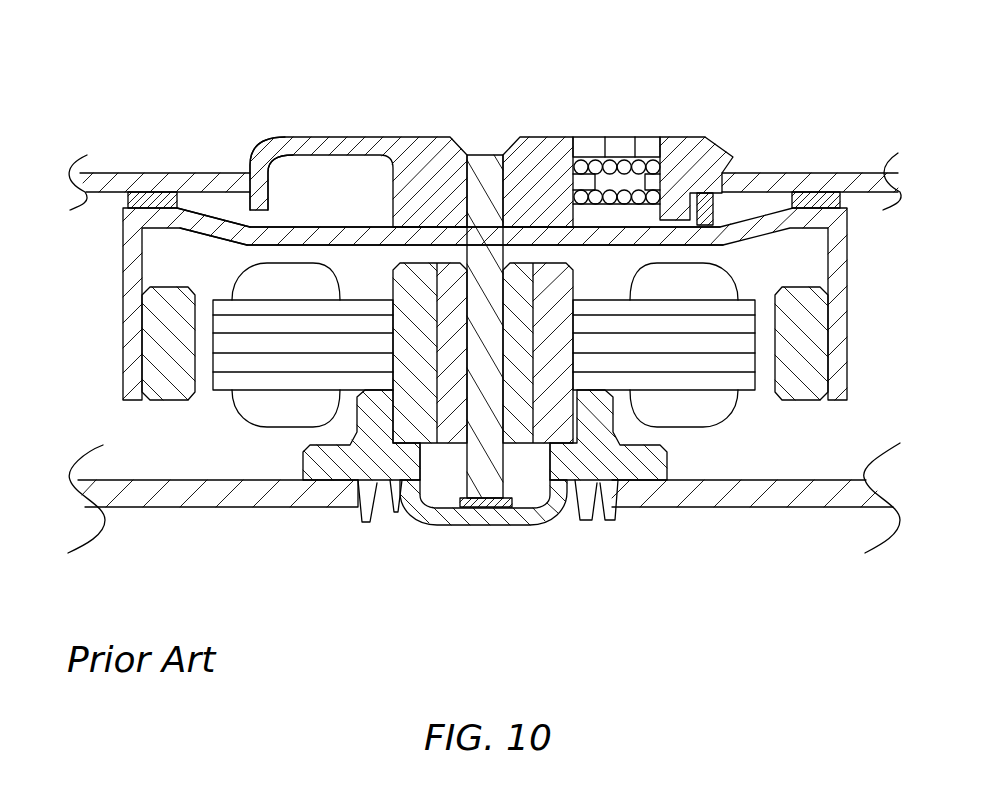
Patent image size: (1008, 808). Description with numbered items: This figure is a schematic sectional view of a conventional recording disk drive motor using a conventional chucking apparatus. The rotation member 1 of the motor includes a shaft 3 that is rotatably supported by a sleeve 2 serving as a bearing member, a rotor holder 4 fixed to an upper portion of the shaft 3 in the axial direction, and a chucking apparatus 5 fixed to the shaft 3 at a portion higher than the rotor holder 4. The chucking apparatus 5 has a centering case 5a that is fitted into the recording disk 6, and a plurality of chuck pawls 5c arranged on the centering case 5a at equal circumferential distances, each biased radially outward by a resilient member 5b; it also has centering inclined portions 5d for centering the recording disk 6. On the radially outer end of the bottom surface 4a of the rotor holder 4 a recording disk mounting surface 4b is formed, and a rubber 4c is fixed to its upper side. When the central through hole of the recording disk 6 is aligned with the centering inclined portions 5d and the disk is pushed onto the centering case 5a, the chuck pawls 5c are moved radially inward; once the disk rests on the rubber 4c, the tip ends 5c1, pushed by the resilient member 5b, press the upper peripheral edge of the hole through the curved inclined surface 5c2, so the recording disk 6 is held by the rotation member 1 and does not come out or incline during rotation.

The rotation member 1 is at (468, 311).
The sleeve 2 is at (515, 420).
The shaft 3 is at (490, 445).
The rotor holder 4 is at (441, 394).
The bottom surface 4a is at (280, 237).
The recording disk mounting surface 4b is at (153, 217).
The rubber 4c is at (150, 192).
The chucking apparatus 5 is at (529, 114).
The centering case 5a is at (319, 132).
The resilient member 5b is at (629, 167).
The chuck pawl 5c is at (686, 152).
The tip end 5c1 is at (717, 183).
The inclined surface 5c2 is at (742, 187).
The centering inclined portion 5d is at (258, 165).
The recording disk 6 is at (823, 185).